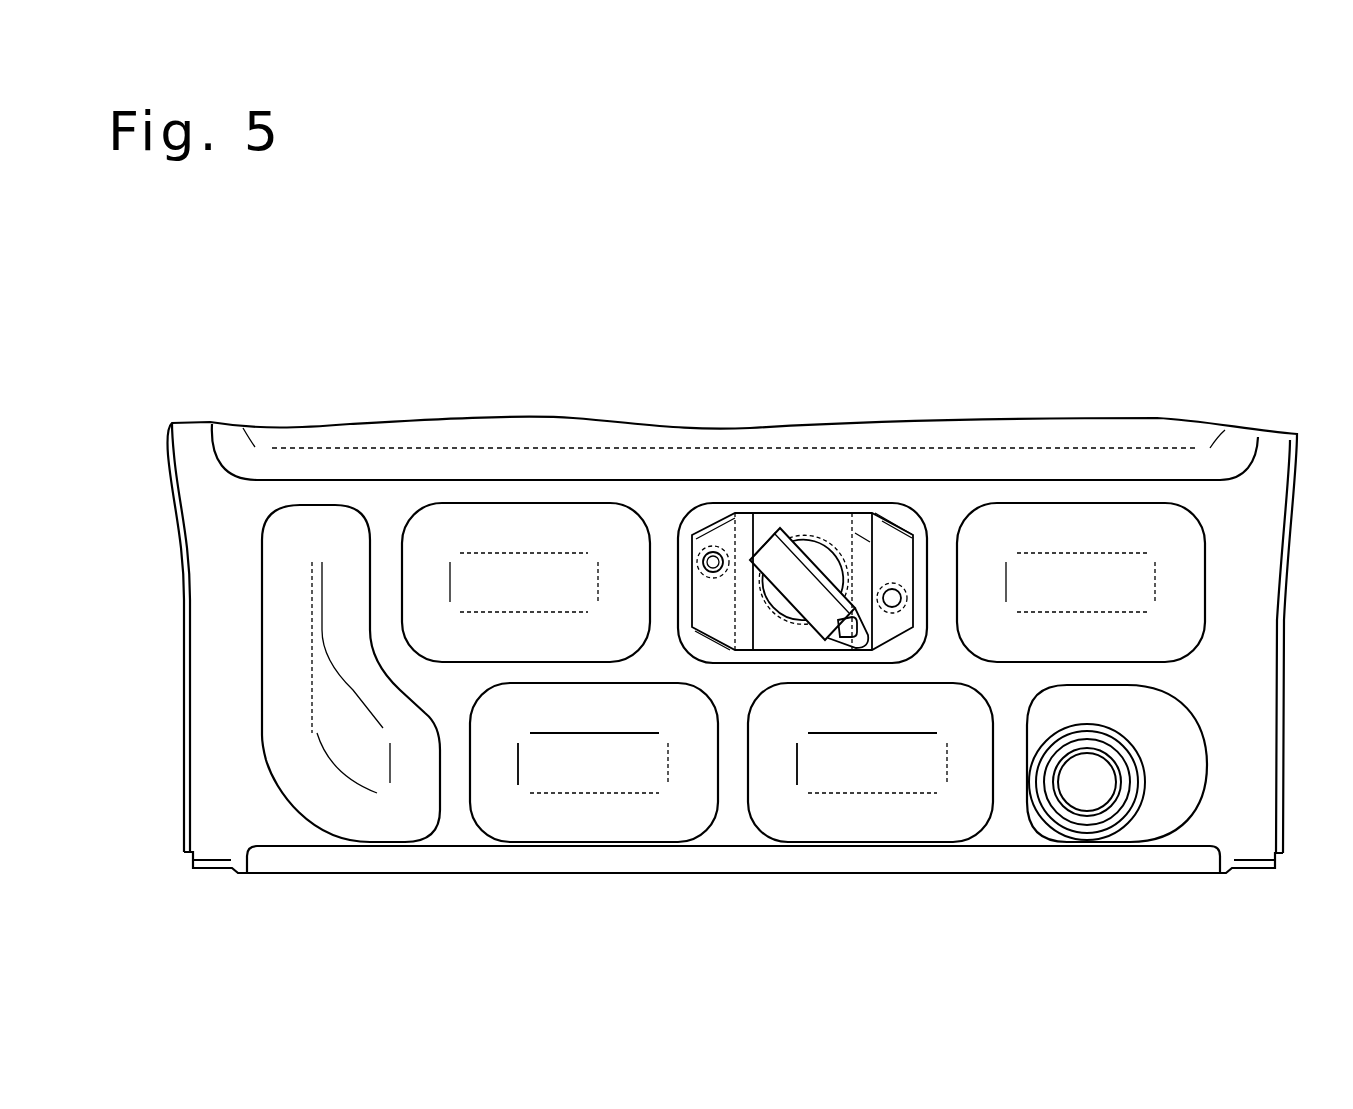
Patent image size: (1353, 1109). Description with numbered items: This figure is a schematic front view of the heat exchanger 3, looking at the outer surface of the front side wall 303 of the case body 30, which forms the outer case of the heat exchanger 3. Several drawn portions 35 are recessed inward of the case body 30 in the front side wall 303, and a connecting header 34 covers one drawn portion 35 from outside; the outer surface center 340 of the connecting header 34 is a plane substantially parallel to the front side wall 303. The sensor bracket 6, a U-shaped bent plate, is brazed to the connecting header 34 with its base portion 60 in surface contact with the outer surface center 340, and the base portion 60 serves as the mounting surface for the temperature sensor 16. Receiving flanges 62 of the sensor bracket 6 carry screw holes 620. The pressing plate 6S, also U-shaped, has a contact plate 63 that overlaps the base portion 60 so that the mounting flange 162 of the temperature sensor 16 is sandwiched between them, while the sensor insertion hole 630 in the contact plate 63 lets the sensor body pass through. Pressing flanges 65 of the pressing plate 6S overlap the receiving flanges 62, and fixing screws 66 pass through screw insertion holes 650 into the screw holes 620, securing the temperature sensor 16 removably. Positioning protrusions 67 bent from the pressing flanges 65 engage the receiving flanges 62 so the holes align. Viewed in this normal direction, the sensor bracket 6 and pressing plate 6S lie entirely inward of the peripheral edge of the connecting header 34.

The heat exchanger 3 is at (223, 890).
The case body 30 is at (185, 813).
The front side wall 303 is at (218, 770).
The connecting header 34 is at (243, 458).
The outer surface center 340 is at (330, 730).
The drawn portion 35 is at (288, 515).
The sensor bracket 6 is at (818, 638).
The pressing plate 6S is at (781, 527).
The temperature sensor 16 is at (842, 545).
The base portion 60 is at (792, 638).
The receiving flange 62 is at (888, 634).
The screw hole 620 is at (898, 604).
The contact plate 63 is at (765, 627).
The sensor insertion hole 630 is at (860, 535).
The pressing flange 65 is at (703, 598).
The screw insertion hole 650 is at (700, 555).
The fixing screw 66 is at (740, 537).
The positioning protrusion 67 is at (902, 557).
The mounting flange 162 is at (843, 641).